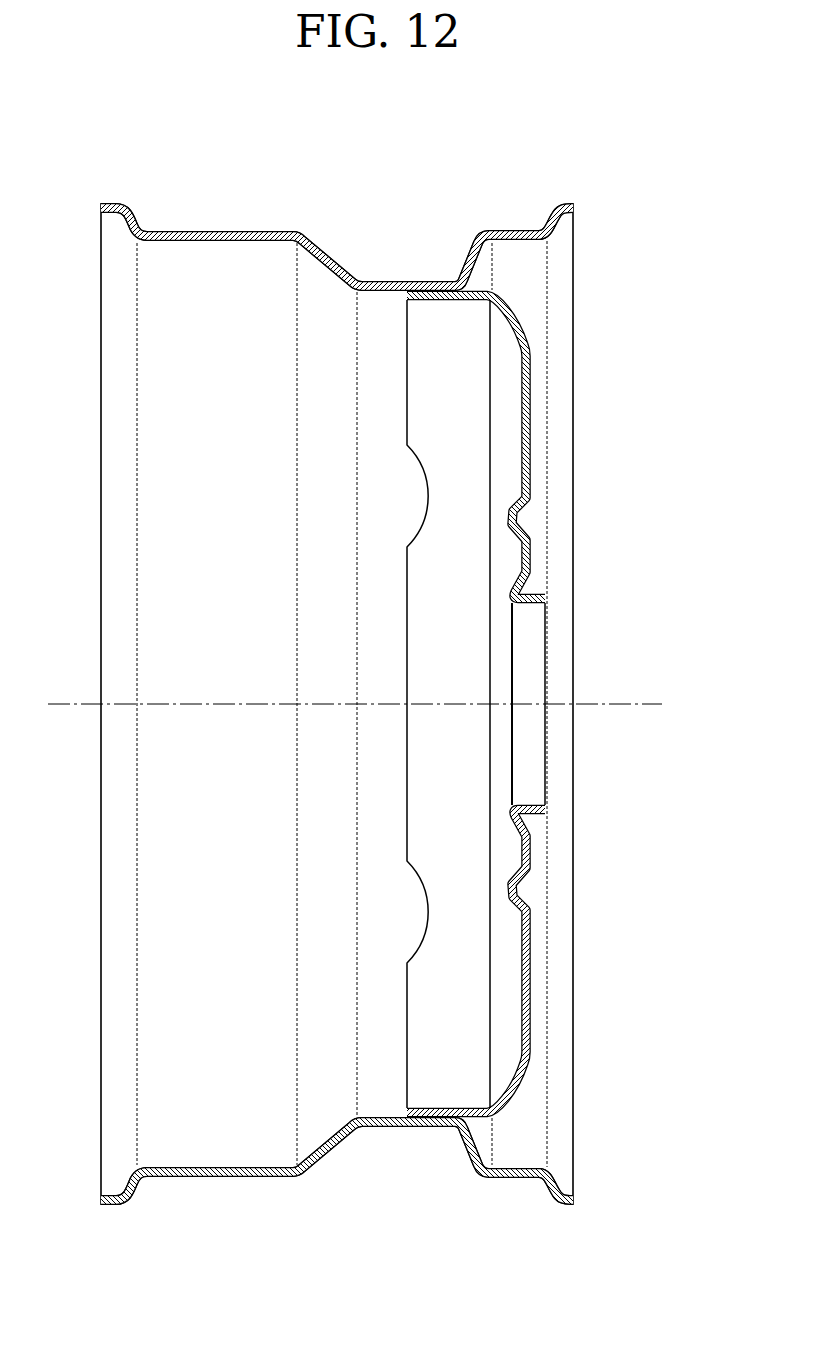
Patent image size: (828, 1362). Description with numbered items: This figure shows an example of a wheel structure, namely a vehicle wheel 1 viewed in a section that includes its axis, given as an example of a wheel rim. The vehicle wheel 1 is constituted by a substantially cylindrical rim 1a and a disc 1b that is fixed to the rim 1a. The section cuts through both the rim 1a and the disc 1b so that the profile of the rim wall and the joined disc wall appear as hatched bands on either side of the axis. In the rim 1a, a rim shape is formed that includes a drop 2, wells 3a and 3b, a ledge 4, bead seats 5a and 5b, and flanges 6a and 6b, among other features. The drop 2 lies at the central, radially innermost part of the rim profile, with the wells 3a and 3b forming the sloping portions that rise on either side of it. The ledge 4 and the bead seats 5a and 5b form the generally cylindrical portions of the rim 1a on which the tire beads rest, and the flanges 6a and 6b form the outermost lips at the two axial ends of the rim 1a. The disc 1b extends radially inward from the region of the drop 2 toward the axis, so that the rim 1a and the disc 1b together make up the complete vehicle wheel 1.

The vehicle wheel 1 is at (612, 425).
The rim 1a is at (278, 231).
The disc 1b is at (407, 704).
The drop 2 is at (415, 281).
The well 3a is at (322, 250).
The well 3b is at (471, 257).
The ledge 4 is at (240, 231).
The bead seat 5a is at (152, 231).
The bead seat 5b is at (513, 230).
The flange 6a is at (110, 203).
The flange 6b is at (560, 203).